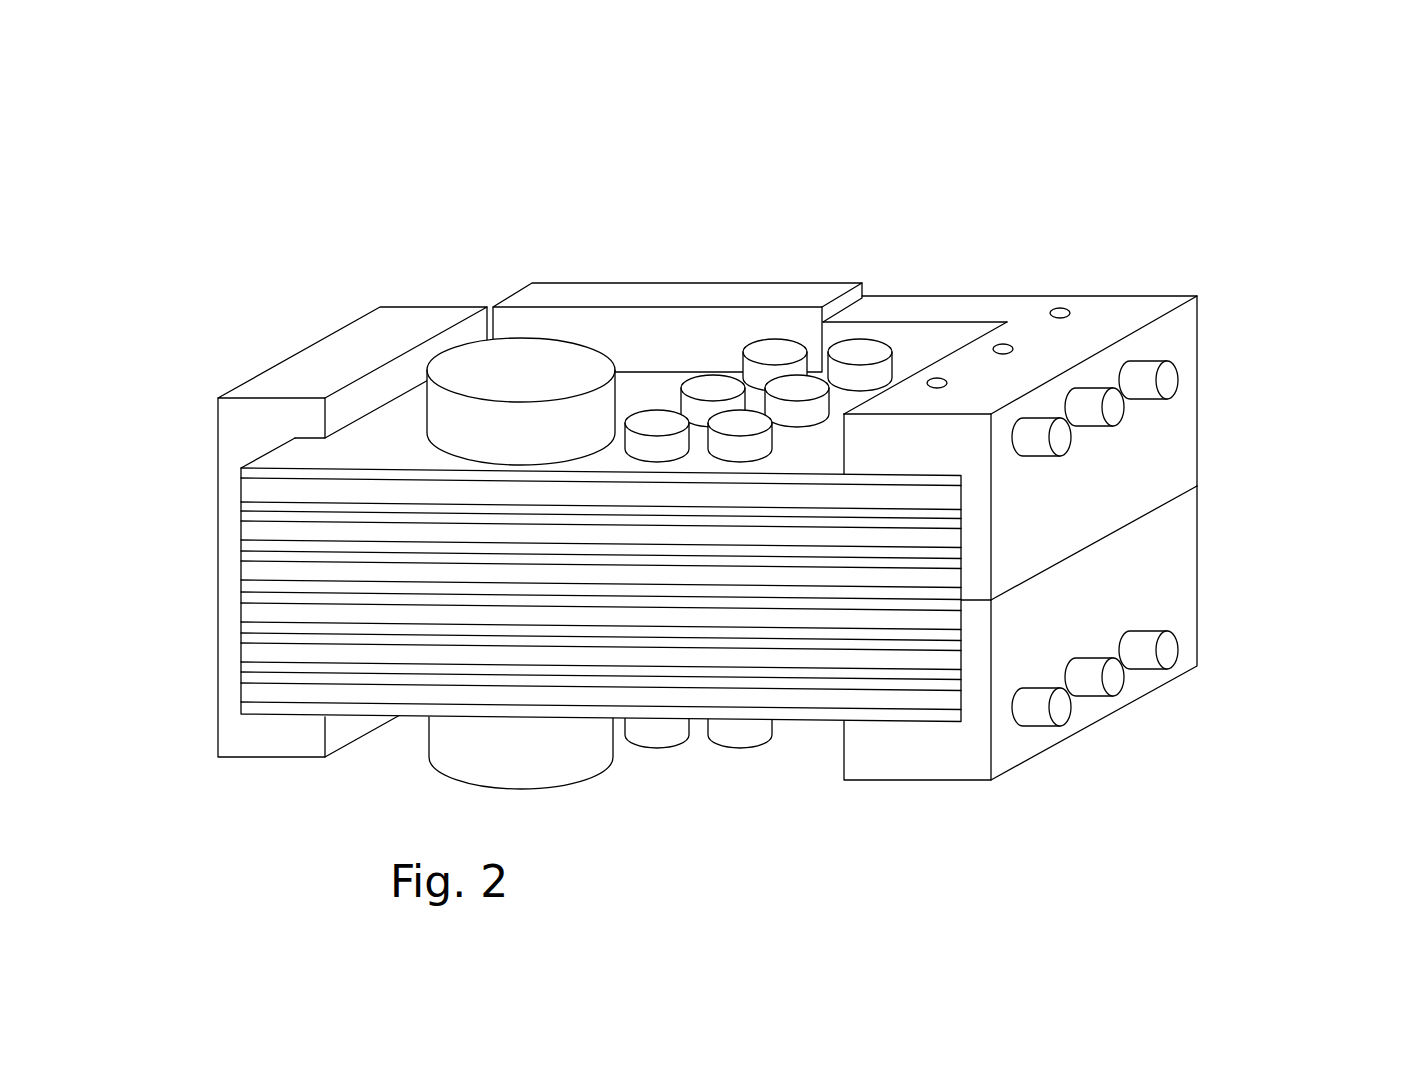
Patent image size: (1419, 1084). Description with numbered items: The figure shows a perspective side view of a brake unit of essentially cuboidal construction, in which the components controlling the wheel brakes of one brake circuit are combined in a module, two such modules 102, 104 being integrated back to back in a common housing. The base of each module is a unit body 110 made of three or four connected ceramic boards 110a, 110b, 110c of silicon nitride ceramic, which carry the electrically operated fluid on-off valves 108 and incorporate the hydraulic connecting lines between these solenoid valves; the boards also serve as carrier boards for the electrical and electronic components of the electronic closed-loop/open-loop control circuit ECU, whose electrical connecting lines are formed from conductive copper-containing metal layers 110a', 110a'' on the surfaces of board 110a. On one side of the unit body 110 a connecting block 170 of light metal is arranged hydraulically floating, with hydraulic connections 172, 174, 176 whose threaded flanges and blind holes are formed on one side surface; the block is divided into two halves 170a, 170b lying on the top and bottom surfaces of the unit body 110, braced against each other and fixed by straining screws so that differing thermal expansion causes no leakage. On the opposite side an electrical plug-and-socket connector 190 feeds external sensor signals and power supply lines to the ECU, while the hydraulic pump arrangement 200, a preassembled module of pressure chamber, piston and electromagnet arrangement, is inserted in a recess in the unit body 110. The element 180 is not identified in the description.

The module 102 is at (1263, 372).
The module 104 is at (1262, 520).
The fluid on-off valves 108 is at (870, 342).
The unit body 110 is at (527, 521).
The ceramic board 110a is at (527, 477).
The metal layer 110a' is at (192, 414).
The metal layer 110a'' is at (243, 410).
The ceramic board 110b is at (241, 527).
The ceramic board 110c is at (241, 568).
The connecting block 170 is at (1078, 463).
The connecting block half 170a is at (1078, 353).
The connecting block half 170b is at (947, 758).
The hydraulic connection 172 is at (1048, 413).
The hydraulic connection 174 is at (1103, 393).
The hydraulic connection 176 is at (1150, 358).
The cover plate 180 is at (942, 308).
The electrical plug-and-socket connector 190 is at (380, 338).
The hydraulic pump arrangement 200 is at (522, 380).
The electronic closed-loop/open-loop control circuit ECU is at (658, 285).